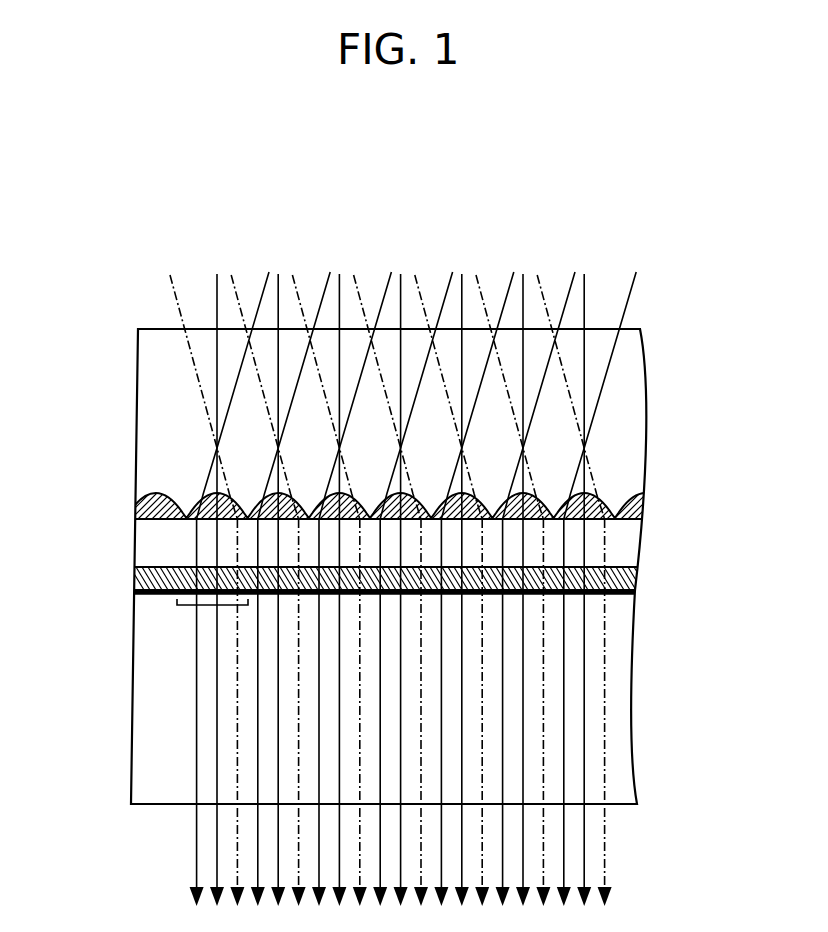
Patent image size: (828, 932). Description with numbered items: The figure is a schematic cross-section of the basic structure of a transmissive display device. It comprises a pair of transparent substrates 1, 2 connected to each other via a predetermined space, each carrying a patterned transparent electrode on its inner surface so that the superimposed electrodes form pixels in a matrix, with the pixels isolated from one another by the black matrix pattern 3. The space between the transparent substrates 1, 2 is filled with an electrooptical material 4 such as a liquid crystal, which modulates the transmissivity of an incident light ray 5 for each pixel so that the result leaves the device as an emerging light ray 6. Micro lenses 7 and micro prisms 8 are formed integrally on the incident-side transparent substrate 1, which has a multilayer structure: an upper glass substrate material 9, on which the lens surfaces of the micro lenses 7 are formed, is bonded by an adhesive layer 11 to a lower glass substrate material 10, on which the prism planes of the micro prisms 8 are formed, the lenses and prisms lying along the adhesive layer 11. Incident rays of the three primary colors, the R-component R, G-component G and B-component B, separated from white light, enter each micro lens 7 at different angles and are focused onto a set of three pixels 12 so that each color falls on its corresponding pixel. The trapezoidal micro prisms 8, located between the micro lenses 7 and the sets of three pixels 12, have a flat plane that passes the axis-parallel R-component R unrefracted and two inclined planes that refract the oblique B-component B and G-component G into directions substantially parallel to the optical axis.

The transparent substrate 1 is at (654, 405).
The transparent substrate 2 is at (618, 725).
The black matrix pattern 3 is at (633, 593).
The electrooptical material 4 is at (633, 577).
The incident light ray 5 is at (168, 230).
The emerging light ray 6 is at (613, 842).
The micro lens 7 is at (207, 492).
The micro prism 8 is at (203, 520).
The upper glass substrate material 9 is at (630, 447).
The lower glass substrate material 10 is at (625, 542).
The adhesive layer 11 is at (642, 508).
The set of three pixels 12 is at (210, 609).
The R-component R is at (217, 288).
The G-component G is at (264, 288).
The B-component B is at (172, 277).